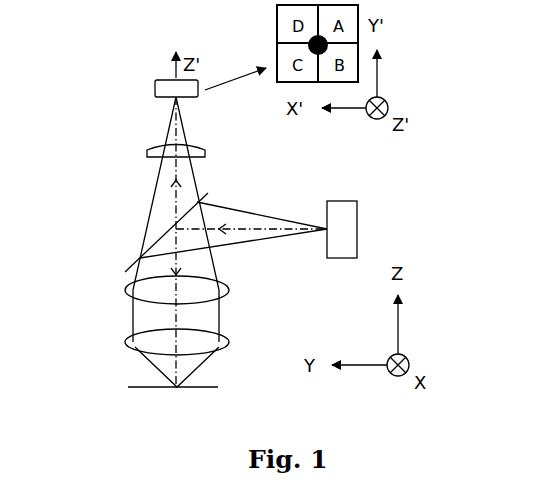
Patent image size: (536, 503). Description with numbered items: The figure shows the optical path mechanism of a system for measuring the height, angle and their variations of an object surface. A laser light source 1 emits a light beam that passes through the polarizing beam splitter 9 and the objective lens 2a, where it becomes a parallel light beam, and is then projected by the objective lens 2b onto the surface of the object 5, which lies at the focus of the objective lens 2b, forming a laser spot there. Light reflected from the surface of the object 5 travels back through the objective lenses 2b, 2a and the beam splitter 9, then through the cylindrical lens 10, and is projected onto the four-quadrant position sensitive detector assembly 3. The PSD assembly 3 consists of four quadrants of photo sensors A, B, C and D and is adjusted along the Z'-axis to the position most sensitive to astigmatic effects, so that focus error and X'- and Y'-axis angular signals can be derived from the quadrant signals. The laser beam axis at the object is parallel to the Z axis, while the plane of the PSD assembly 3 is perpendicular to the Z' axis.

The laser light source 1 is at (345, 231).
The objective lens 2a is at (148, 292).
The objective lens 2b is at (145, 345).
The four-quadrant position sensitive detector assembly 3 is at (165, 85).
The surface of the object 5 is at (218, 386).
The polarizing beam splitter 9 is at (127, 252).
The cylindrical lens 10 is at (150, 148).